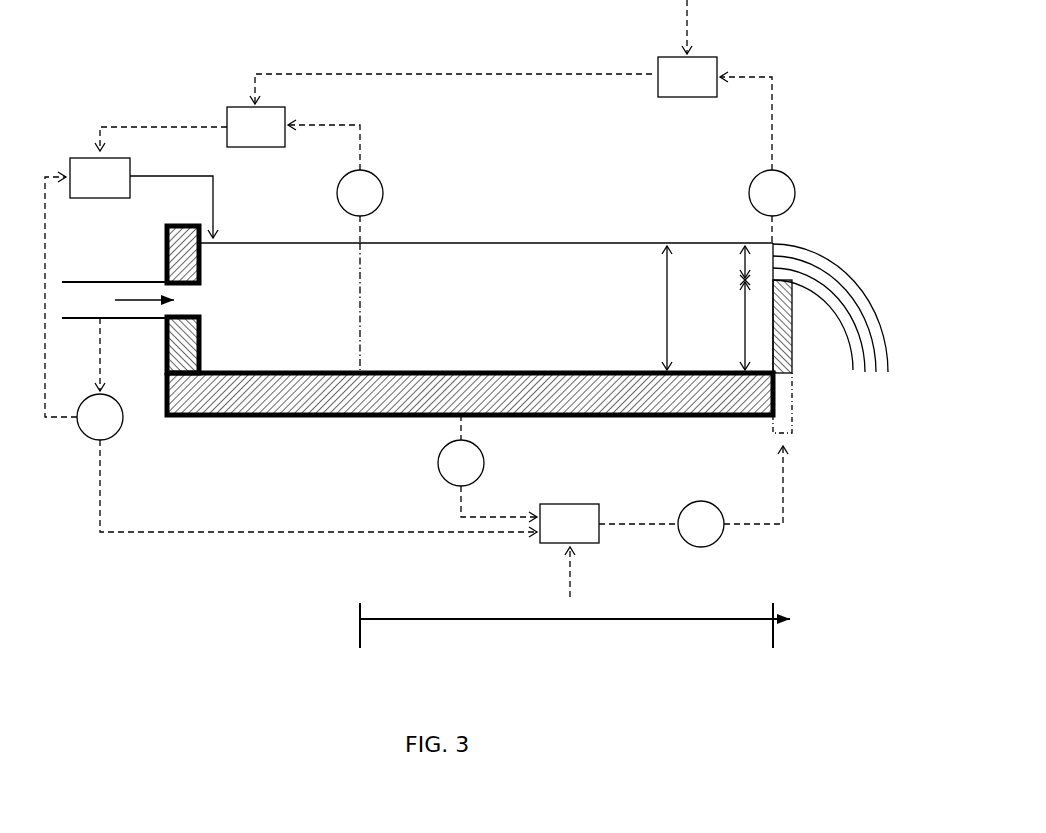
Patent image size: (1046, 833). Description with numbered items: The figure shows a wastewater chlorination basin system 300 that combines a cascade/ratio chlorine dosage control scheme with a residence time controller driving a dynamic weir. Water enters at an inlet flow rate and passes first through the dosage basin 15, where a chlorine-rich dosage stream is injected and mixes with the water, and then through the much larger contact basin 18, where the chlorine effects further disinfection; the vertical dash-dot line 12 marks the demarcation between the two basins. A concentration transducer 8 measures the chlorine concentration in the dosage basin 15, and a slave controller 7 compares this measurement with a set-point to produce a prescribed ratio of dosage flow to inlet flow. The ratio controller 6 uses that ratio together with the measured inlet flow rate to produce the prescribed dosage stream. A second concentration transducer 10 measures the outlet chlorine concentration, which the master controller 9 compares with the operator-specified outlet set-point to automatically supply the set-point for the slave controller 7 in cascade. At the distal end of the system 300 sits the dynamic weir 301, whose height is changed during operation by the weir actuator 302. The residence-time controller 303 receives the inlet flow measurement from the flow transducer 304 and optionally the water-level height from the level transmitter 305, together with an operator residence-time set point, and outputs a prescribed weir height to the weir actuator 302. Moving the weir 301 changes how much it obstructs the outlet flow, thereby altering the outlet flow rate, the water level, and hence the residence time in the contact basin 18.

The ratio controller 6 is at (70, 163).
The slave controller 7 is at (227, 115).
The concentration transducer 8 is at (383, 193).
The master controller 9 is at (658, 97).
The concentration transducer 10 is at (750, 208).
The vertical dash-dot line 12 is at (360, 298).
The dosage basin 15 is at (283, 353).
The contact basin 18 is at (550, 355).
The system 300 is at (51, 662).
The dynamic weir 301 is at (792, 355).
The weir actuator 302 is at (705, 501).
The residence-time controller 303 is at (583, 504).
The flow transducer 304 is at (120, 432).
The level transmitter 305 is at (443, 478).